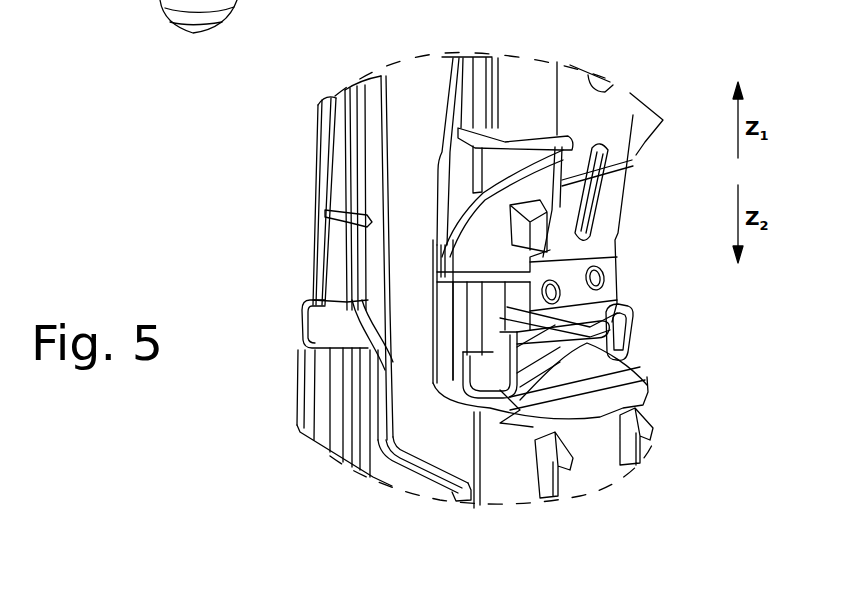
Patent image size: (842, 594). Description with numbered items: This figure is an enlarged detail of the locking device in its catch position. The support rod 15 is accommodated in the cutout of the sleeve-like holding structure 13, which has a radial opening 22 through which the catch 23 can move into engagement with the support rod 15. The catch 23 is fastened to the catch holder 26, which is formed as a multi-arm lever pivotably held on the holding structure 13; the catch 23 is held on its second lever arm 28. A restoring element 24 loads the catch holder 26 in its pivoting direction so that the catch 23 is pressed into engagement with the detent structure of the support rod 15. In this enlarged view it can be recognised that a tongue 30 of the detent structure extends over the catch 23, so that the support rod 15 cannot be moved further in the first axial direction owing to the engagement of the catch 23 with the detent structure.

The holding structure 13 is at (342, 178).
The support rod 15 is at (190, 22).
The radial opening 22 is at (463, 420).
The catch 23 is at (636, 340).
The restoring element 24 is at (608, 112).
The catch holder 26 is at (407, 110).
The second lever arm 28 is at (412, 277).
The tongue 30 is at (648, 390).